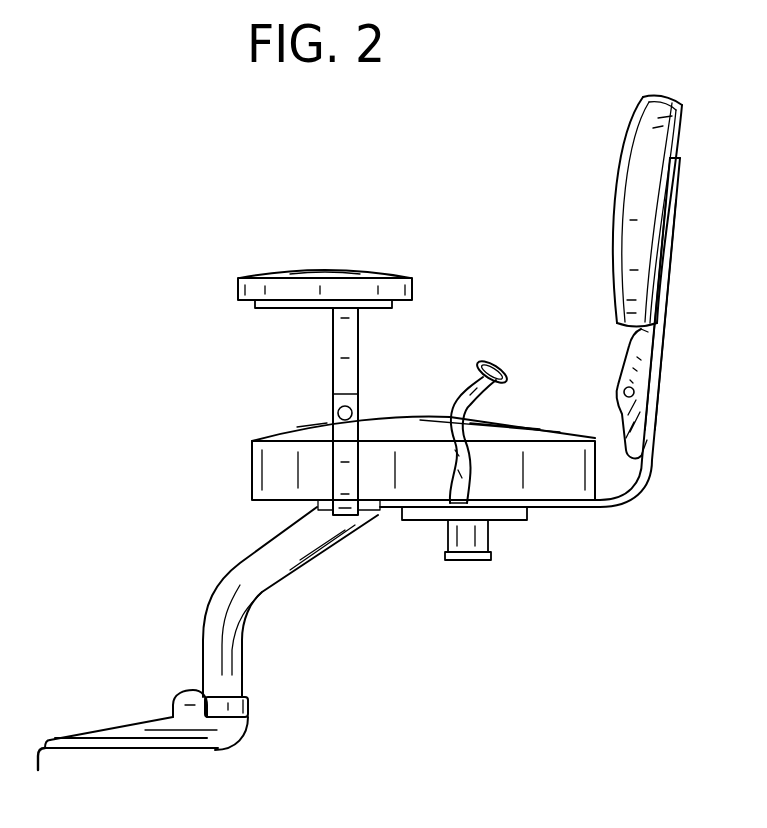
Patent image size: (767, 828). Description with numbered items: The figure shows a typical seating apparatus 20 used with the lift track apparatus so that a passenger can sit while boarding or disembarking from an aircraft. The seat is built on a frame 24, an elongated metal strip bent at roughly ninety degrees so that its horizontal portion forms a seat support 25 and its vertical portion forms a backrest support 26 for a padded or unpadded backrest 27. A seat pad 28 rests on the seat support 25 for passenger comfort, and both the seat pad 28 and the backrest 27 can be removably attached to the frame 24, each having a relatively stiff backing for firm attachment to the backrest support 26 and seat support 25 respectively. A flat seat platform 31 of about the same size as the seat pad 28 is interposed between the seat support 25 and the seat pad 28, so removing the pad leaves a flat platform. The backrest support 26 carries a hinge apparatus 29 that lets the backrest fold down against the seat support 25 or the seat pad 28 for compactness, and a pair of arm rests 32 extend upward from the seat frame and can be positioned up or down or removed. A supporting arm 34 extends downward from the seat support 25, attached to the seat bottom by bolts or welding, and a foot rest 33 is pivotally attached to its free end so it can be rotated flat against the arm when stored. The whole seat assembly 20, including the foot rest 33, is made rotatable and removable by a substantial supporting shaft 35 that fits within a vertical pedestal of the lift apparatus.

The seating apparatus 20 is at (509, 266).
The frame 24 is at (658, 378).
The seat support 25 is at (578, 507).
The backrest support 26 is at (662, 330).
The backrest 27 is at (646, 213).
The seat pad 28 is at (415, 487).
The hinge apparatus 29 is at (657, 391).
The seat platform 31 is at (505, 492).
The arm rests 32 is at (333, 268).
The foot rest 33 is at (138, 752).
The supporting arm 34 is at (229, 568).
The supporting shaft 35 is at (497, 362).